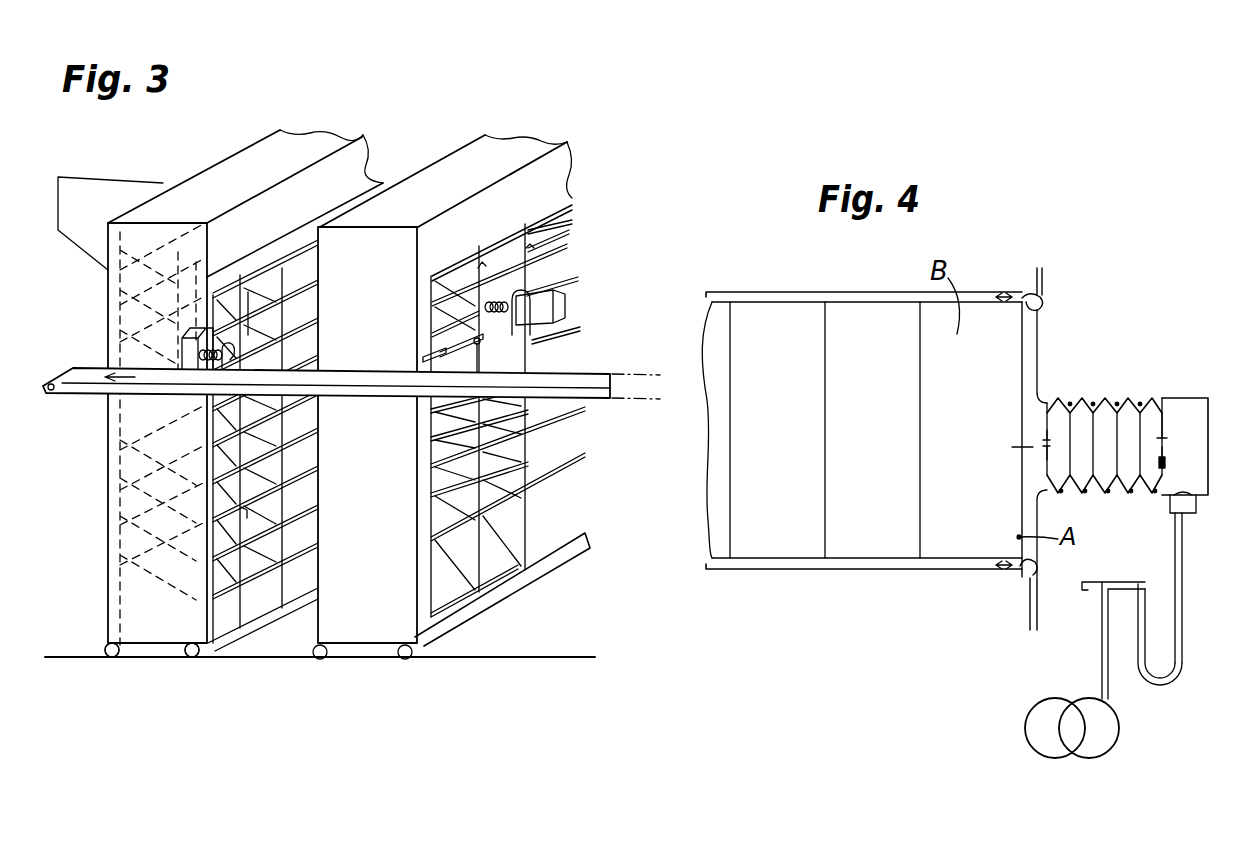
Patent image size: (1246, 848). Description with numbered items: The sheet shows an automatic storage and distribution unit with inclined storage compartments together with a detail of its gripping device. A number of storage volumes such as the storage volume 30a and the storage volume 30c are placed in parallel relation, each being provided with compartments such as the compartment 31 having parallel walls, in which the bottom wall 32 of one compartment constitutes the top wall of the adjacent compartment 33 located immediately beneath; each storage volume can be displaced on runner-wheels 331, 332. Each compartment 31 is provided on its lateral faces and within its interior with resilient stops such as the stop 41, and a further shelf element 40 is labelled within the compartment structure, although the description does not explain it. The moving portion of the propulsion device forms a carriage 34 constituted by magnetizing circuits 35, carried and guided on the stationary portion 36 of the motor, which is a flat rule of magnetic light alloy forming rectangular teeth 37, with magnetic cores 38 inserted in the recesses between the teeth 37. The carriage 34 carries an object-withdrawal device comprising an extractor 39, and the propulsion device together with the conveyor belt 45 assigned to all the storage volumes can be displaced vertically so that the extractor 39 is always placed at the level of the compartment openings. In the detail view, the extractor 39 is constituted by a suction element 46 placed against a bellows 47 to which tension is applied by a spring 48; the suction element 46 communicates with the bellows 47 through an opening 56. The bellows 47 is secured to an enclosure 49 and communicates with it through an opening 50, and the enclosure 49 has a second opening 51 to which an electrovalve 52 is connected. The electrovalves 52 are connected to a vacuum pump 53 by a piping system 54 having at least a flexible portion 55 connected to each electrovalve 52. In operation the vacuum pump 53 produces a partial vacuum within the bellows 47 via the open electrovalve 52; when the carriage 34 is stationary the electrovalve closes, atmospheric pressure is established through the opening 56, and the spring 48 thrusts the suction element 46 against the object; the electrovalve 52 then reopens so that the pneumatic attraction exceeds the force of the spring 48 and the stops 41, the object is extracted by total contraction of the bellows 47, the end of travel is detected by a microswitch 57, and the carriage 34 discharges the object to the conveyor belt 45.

In FIG. 3, the storage volume 30a is at (288, 150).
In FIG. 3, the storage volume 30c is at (490, 160).
In FIG. 3, the compartment 31 is at (160, 465).
In FIG. 3, the bottom wall 32 is at (143, 440).
In FIG. 3, the adjacent compartment 33 is at (122, 505).
In FIG. 3, the carriage 34 is at (560, 322).
In FIG. 3, the magnetizing circuits 35 is at (560, 310).
In FIG. 3, the stationary portion 36 is at (432, 354).
In FIG. 3, the rectangular teeth 37 is at (448, 343).
In FIG. 3, the magnetic cores 38 is at (490, 355).
In FIG. 3, the extractor 39 is at (235, 357).
In FIG. 3, the shelf 40 is at (220, 492).
In FIG. 3, the resilient stop 41 is at (232, 520).
In FIG. 4, the resilient stop 41 is at (1022, 292).
In FIG. 3, the conveyor belt 45 is at (382, 386).
In FIG. 3, the runner-wheel 331 is at (110, 658).
In FIG. 3, the runner-wheel 332 is at (190, 658).
In FIG. 4, the suction element 46 is at (1040, 412).
In FIG. 4, the bellows 47 is at (1085, 420).
In FIG. 4, the spring 48 is at (1140, 410).
In FIG. 4, the enclosure 49 is at (1180, 415).
In FIG. 4, the opening 50 is at (1165, 441).
In FIG. 4, the second opening 51 is at (1175, 497).
In FIG. 4, the electrovalve 52 is at (1195, 588).
In FIG. 4, the vacuum pump 53 is at (1110, 722).
In FIG. 4, the piping system 54 is at (1102, 607).
In FIG. 4, the flexible portion 55 is at (1180, 628).
In FIG. 4, the opening 56 is at (1040, 452).
In FIG. 4, the microswitch 57 is at (1168, 462).